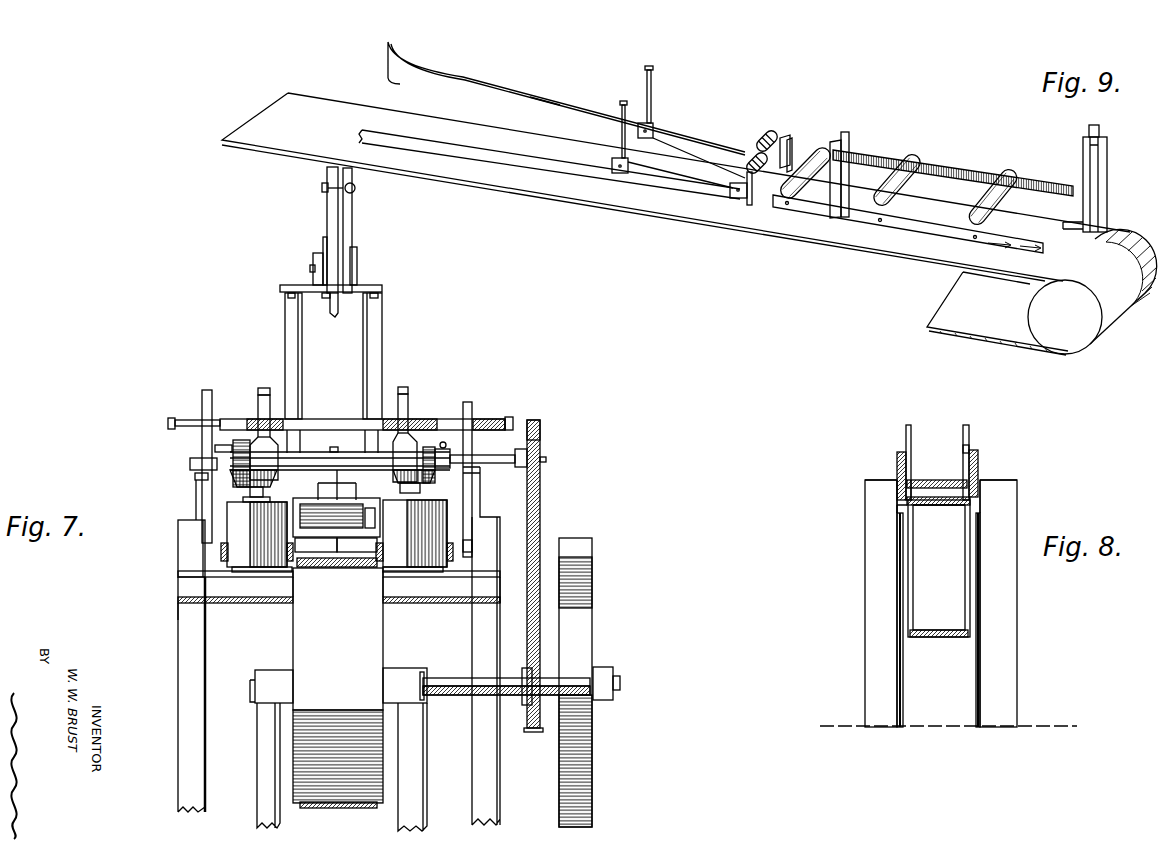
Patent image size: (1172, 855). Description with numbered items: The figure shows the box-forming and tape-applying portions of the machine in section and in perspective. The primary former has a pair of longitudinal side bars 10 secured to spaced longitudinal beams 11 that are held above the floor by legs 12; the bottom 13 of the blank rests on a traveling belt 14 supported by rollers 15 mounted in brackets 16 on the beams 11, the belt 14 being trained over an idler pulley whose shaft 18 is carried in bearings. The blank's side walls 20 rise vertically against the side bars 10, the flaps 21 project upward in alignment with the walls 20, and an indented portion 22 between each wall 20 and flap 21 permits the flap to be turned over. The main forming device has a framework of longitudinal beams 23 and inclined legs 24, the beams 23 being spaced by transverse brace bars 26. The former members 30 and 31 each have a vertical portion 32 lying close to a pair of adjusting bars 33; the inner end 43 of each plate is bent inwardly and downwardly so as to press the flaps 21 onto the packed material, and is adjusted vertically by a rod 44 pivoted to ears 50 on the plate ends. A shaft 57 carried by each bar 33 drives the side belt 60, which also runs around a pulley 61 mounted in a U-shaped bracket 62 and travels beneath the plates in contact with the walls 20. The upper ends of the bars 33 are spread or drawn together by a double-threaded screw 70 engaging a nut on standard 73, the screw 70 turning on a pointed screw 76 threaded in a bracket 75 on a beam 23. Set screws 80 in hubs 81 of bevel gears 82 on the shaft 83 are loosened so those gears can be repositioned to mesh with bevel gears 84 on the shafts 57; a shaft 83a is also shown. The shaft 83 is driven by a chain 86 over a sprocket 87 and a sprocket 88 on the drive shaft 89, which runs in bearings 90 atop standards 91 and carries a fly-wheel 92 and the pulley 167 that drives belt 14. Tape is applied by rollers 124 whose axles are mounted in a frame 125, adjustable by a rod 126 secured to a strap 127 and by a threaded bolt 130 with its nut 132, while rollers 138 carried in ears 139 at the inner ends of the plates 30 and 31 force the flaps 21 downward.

In FIG. 8, the longitudinal side bars 10 is at (896, 458).
In FIG. 8, the longitudinal beams 11 is at (1005, 487).
In FIG. 8, the legs 12 is at (875, 619).
In FIG. 8, the bottom 13 is at (932, 480).
In FIG. 9, the belt 14 is at (958, 299).
In FIG. 7, the belt 14 is at (334, 567).
In FIG. 8, the belt 14 is at (935, 500).
In FIG. 8, the rollers 15 is at (946, 508).
In FIG. 8, the brackets 16 is at (897, 533).
In FIG. 8, the shaft 18 is at (982, 511).
In FIG. 8, the side walls 20 is at (912, 480).
In FIG. 8, the flaps 21 is at (905, 432).
In FIG. 8, the indented portion 22 is at (960, 447).
In FIG. 7, the longitudinal beams 23 is at (177, 555).
In FIG. 7, the inclined legs 24 is at (487, 787).
In FIG. 7, the transverse brace bars 26 is at (339, 598).
In FIG. 9, the forming plate 30 is at (522, 190).
In FIG. 9, the forming plate 31 is at (556, 103).
In FIG. 9, the vertical portion 32 is at (396, 82).
In FIG. 7, the adjusting bars 33 is at (500, 457).
In FIG. 9, the inner end of former plate 43 is at (592, 170).
In FIG. 9, the rod 44 is at (622, 125).
In FIG. 9, the ears 50 is at (656, 132).
In FIG. 7, the shaft 57 is at (263, 573).
In FIG. 7, the belt 60 is at (217, 552).
In FIG. 7, the pulley 61 is at (235, 513).
In FIG. 7, the U-shaped bracket 62 is at (236, 571).
In FIG. 7, the screw 70 is at (348, 419).
In FIG. 7, the standard 73 is at (265, 395).
In FIG. 7, the bracket 75 is at (203, 398).
In FIG. 7, the screw 76 is at (190, 418).
In FIG. 7, the set screws 80 is at (215, 447).
In FIG. 7, the hubs 81 is at (451, 458).
In FIG. 7, the bevel gears 82 is at (261, 418).
In FIG. 7, the shaft 83 is at (498, 458).
In FIG. 7, the shaft 83a is at (360, 440).
In FIG. 7, the bevel gears 84 is at (241, 488).
In FIG. 7, the chain 86 is at (541, 498).
In FIG. 7, the sprocket 87 is at (541, 428).
In FIG. 7, the sprocket 88 is at (525, 706).
In FIG. 7, the drive shaft 89 is at (455, 678).
In FIG. 7, the bearings 90 is at (268, 672).
In FIG. 7, the standards 91 is at (262, 785).
In FIG. 7, the fly-wheel 92 is at (580, 643).
In FIG. 9, the rollers 124 is at (830, 140).
In FIG. 7, the rollers 124 is at (332, 516).
In FIG. 9, the frame 125 is at (957, 174).
In FIG. 9, the rod 126 is at (847, 133).
In FIG. 9, the strap 127 is at (817, 228).
In FIG. 7, the threaded bolt 130 is at (335, 480).
In FIG. 7, the nut 132 is at (343, 483).
In FIG. 9, the rollers 138 is at (763, 134).
In FIG. 9, the ears 139 is at (790, 137).
In FIG. 9, the pulley 167 is at (1100, 337).